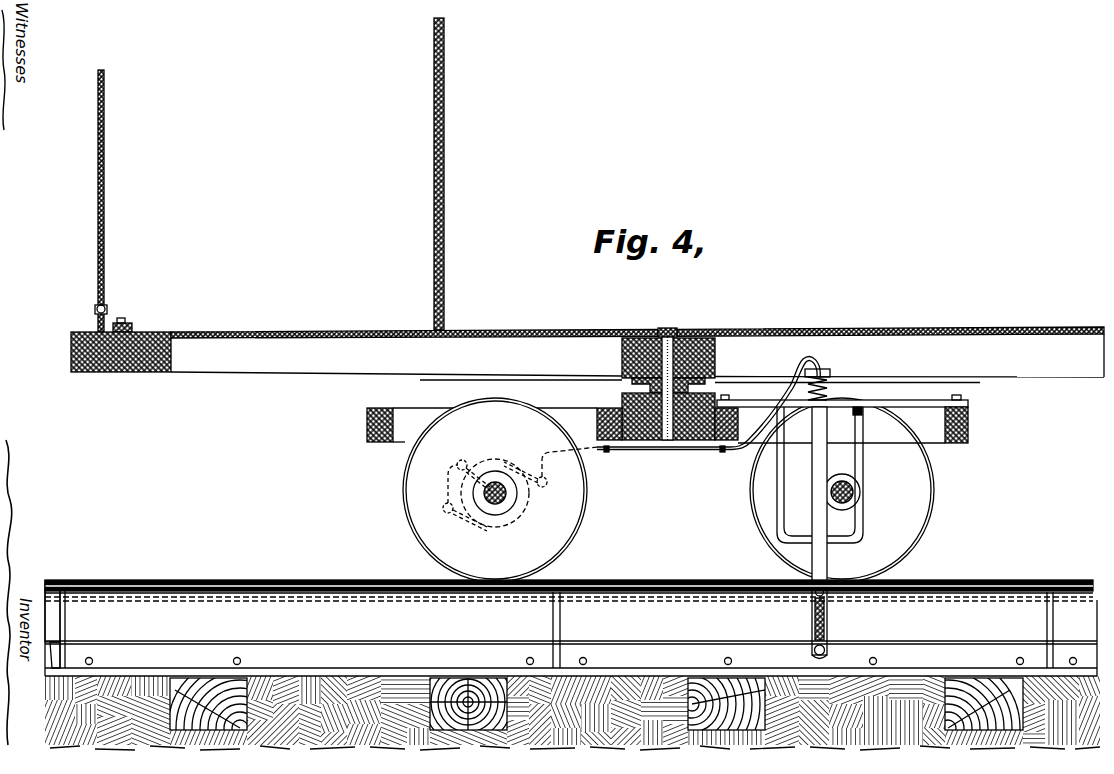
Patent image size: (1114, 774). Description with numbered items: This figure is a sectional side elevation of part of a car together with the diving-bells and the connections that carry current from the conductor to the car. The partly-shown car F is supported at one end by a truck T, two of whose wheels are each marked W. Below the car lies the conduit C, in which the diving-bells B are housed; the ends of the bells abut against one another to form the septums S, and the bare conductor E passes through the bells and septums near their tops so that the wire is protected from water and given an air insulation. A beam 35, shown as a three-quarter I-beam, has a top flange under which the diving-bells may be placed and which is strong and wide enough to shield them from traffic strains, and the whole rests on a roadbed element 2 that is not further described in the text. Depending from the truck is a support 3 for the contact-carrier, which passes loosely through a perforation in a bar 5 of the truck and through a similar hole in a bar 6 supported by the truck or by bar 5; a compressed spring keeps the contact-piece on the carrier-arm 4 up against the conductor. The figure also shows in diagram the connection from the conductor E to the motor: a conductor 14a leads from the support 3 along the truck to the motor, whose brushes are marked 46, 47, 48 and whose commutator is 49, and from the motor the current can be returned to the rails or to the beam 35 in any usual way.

The car F is at (343, 330).
The truck T is at (552, 405).
The bar 5 is at (895, 409).
The conductor 14a is at (646, 449).
The wheels W is at (586, 525).
The commutator 49 is at (530, 518).
The brush 47 is at (475, 467).
The brush 48 is at (462, 520).
The brush 46 is at (533, 471).
The support 3 is at (815, 491).
The bar 6 is at (858, 524).
The carrier-arm 4 is at (828, 613).
The beam 35 is at (288, 573).
The conductor E is at (47, 598).
The diving-bells B is at (571, 628).
The septums S is at (553, 618).
The conduit C is at (571, 663).
The tie 2 is at (211, 678).